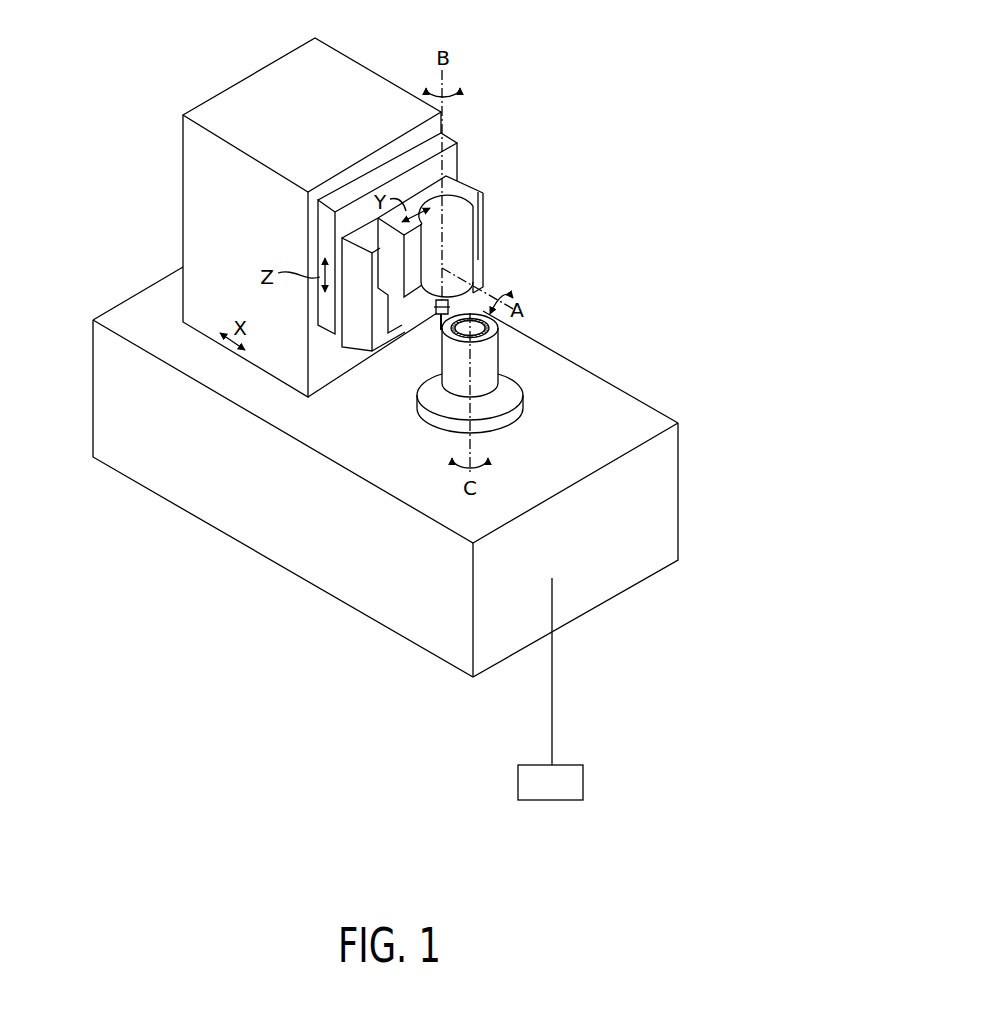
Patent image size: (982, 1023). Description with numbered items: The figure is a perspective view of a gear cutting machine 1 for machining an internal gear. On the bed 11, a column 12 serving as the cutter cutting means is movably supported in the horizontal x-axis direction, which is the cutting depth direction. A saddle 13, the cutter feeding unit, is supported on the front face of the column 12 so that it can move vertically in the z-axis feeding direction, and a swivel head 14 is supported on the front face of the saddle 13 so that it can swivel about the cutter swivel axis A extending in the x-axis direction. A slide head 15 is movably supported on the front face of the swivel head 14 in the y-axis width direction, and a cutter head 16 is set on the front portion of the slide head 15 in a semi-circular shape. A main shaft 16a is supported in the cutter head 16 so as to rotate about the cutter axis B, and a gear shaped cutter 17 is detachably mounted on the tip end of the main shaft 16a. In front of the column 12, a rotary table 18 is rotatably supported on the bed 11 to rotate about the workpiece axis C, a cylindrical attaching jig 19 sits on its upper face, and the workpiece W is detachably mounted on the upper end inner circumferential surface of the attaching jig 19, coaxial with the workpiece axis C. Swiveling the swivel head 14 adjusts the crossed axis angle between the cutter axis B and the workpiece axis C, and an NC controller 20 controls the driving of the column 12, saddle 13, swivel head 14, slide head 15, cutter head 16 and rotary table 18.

The gear cutting machine 1 is at (580, 97).
The bed 11 is at (117, 317).
The column 12 is at (183, 167).
The saddle 13 is at (323, 303).
The swivel head 14 is at (352, 328).
The slide head 15 is at (385, 340).
The cutter head 16 is at (460, 240).
The main shaft 16a is at (440, 322).
The gear shaped cutter 17 is at (435, 315).
The rotary table 18 is at (443, 410).
The attaching jig 19 is at (487, 372).
The NC controller 20 is at (556, 800).
The workpiece W is at (488, 329).